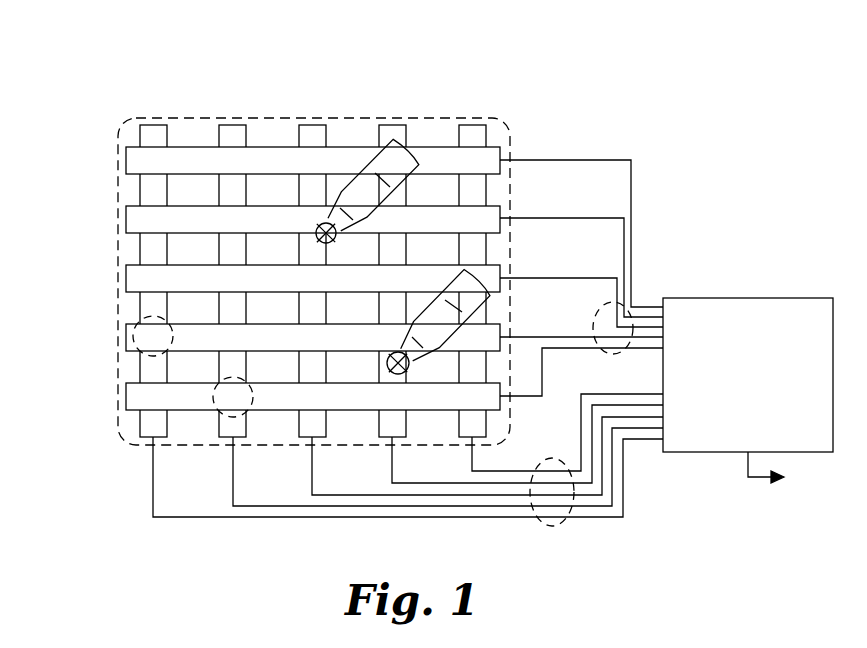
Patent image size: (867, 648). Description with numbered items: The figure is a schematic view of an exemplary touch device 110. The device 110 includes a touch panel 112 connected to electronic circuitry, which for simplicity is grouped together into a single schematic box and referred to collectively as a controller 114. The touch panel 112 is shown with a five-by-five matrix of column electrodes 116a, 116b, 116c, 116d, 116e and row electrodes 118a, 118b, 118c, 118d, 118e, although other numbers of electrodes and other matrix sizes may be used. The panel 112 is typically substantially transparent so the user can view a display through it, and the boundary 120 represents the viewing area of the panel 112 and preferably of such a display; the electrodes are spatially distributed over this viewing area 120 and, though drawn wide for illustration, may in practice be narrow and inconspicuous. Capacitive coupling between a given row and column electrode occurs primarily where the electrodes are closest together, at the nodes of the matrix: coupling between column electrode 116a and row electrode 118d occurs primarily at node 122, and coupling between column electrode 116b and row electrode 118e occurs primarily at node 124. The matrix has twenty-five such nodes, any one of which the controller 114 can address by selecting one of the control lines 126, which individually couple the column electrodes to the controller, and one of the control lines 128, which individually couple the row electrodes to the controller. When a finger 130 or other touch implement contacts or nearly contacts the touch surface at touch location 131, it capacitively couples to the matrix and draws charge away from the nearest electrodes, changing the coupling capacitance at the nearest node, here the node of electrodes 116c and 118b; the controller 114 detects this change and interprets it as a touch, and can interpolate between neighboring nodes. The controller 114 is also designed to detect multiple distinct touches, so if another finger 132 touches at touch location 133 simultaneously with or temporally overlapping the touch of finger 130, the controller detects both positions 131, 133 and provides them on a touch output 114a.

The touch device 110 is at (663, 63).
The touch panel 112 is at (118, 112).
The controller 114 is at (768, 386).
The touch output 114a is at (752, 482).
The column electrode 116a is at (151, 132).
The column electrode 116b is at (231, 132).
The column electrode 116c is at (311, 132).
The column electrode 116d is at (391, 132).
The column electrode 116e is at (471, 132).
The row electrode 118a is at (131, 160).
The row electrode 118b is at (131, 219).
The row electrode 118c is at (131, 278).
The row electrode 118d is at (131, 337).
The row electrode 118e is at (131, 396).
The boundary 120 is at (506, 130).
The node 122 is at (145, 318).
The node 124 is at (230, 420).
The control lines 126 is at (552, 527).
The control lines 128 is at (633, 300).
The finger 130 is at (384, 151).
The touch location 131 is at (321, 226).
The finger 132 is at (472, 287).
The touch location 133 is at (392, 373).